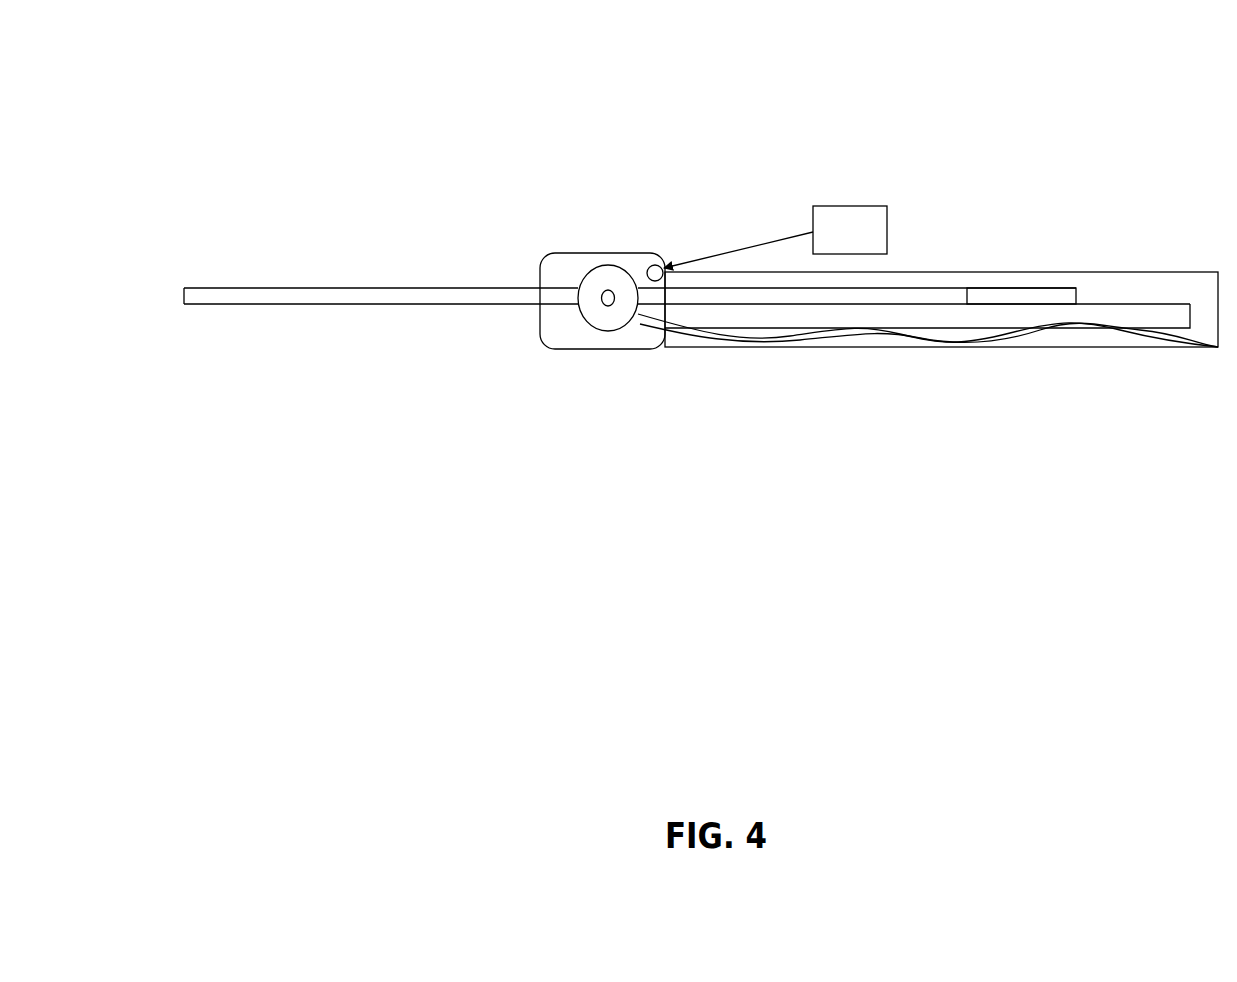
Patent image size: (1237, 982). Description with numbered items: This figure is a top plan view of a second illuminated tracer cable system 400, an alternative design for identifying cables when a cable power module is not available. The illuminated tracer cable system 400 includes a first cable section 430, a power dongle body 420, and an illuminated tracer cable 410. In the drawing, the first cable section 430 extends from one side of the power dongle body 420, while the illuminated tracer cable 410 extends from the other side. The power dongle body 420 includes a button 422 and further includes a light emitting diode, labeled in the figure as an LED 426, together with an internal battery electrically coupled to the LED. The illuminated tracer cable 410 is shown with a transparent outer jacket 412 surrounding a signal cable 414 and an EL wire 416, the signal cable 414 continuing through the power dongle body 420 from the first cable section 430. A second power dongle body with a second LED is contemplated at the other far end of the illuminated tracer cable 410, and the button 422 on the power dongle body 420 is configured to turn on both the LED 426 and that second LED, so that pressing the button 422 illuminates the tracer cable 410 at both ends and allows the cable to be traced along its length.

The second illuminated tracer cable system 400 is at (723, 45).
The illuminated tracer cable 410 is at (928, 367).
The transparent outer jacket 412 is at (802, 352).
The signal cable 414 is at (966, 290).
The EL wire 416 is at (1007, 337).
The power dongle body 420 is at (729, 413).
The button 422 is at (610, 307).
The LED 426 is at (876, 210).
The first cable section 430 is at (370, 296).